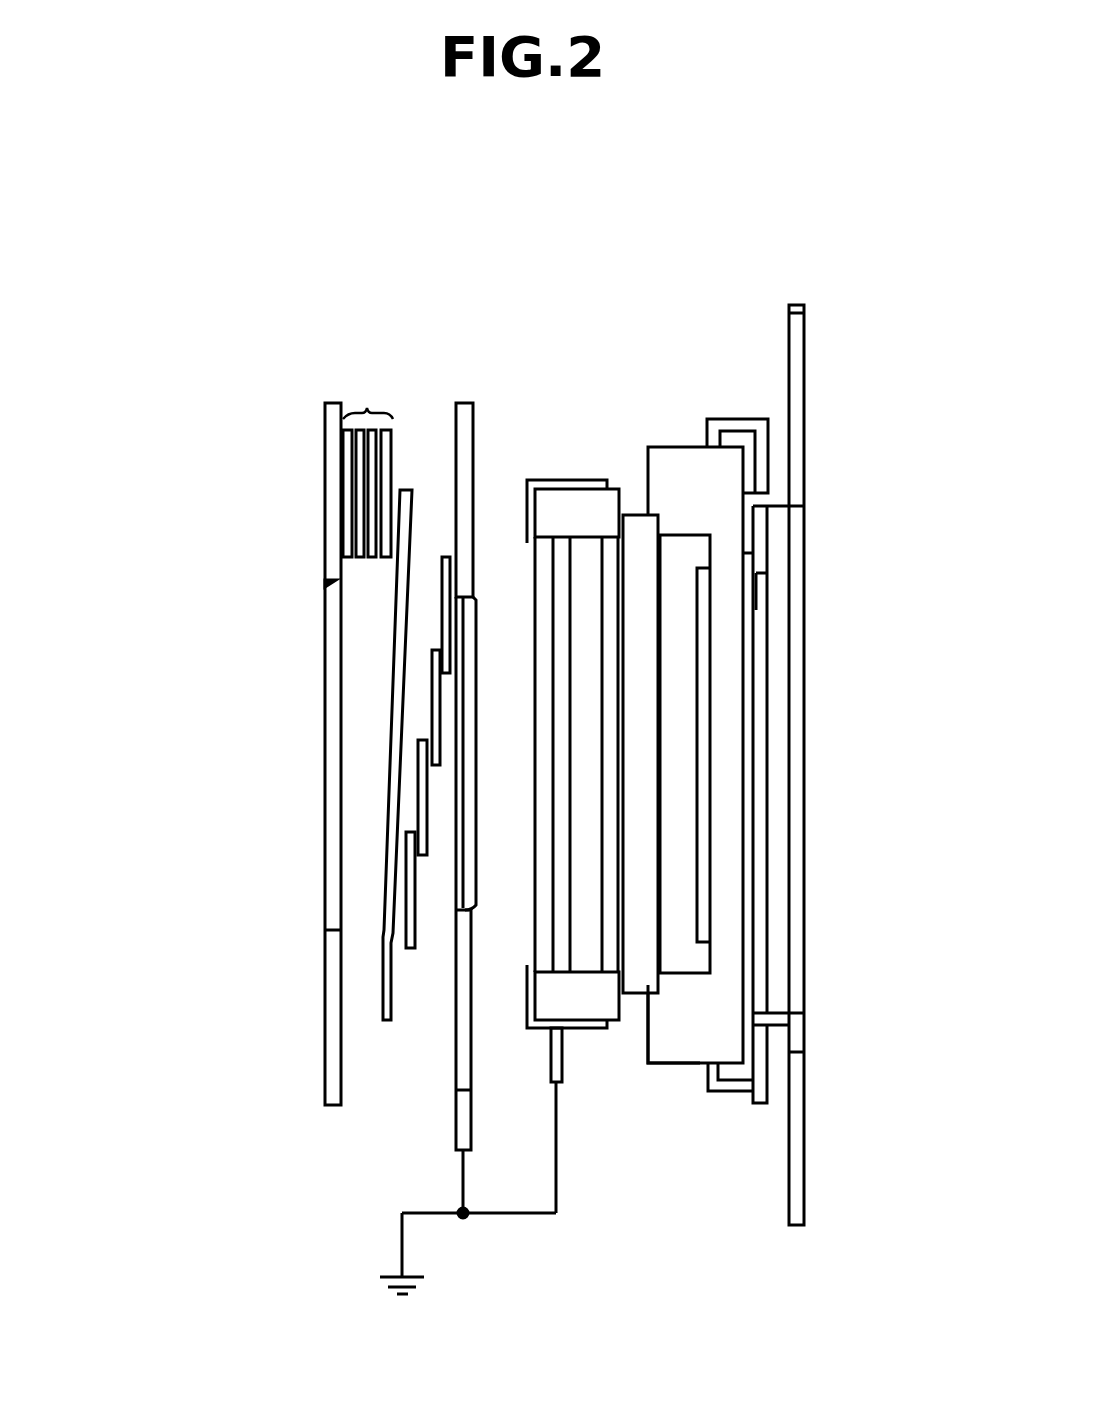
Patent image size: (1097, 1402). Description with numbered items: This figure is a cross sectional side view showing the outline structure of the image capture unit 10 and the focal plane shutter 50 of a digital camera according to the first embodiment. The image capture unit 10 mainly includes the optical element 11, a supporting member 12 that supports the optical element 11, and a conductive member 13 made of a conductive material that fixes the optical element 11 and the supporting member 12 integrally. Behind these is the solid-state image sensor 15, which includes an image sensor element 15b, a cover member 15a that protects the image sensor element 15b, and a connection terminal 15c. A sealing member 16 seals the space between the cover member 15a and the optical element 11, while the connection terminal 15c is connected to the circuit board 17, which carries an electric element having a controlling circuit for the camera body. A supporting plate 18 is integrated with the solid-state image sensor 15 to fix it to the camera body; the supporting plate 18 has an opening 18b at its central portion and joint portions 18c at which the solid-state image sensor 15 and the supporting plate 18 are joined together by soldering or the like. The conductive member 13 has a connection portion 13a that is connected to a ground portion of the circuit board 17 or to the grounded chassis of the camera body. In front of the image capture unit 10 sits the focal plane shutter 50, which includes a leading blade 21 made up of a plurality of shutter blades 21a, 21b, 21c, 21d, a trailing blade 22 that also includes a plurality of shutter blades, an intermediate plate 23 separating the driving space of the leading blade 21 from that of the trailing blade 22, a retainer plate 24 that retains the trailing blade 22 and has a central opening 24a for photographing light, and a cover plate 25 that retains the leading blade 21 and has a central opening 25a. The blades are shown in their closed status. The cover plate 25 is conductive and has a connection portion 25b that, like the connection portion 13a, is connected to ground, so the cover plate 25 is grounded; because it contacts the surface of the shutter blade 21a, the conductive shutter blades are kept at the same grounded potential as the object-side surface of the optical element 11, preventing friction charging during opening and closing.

The image capture unit 10 is at (782, 206).
The optical element 11 is at (540, 575).
The supporting member 12 is at (612, 497).
The conductive member 13 is at (565, 485).
The connection portion 13a is at (557, 1062).
The solid-state image sensor 15 is at (677, 460).
The cover member 15a is at (647, 982).
The image sensor element 15b is at (710, 900).
The connection terminal 15c is at (732, 420).
The sealing member 16 is at (625, 993).
The circuit board 17 is at (765, 690).
The supporting plate 18 is at (805, 375).
The opening 18b is at (805, 480).
The joint portions 18c is at (750, 535).
The leading blade 21 is at (150, 587).
The shutter blade 21a is at (442, 625).
The shutter blade 21b is at (432, 715).
The shutter blade 21c is at (418, 790).
The shutter blade 21d is at (406, 905).
The trailing blade 22 is at (366, 409).
The intermediate plate 23 is at (382, 995).
The retainer plate 24 is at (330, 403).
The opening 24a is at (325, 590).
The cover plate 25 is at (462, 403).
The opening 25a is at (472, 912).
The connection portion 25b is at (457, 1128).
The focal plane shutter 50 is at (116, 300).